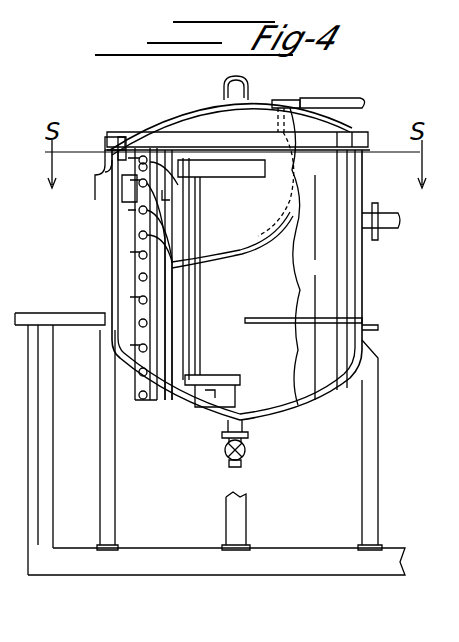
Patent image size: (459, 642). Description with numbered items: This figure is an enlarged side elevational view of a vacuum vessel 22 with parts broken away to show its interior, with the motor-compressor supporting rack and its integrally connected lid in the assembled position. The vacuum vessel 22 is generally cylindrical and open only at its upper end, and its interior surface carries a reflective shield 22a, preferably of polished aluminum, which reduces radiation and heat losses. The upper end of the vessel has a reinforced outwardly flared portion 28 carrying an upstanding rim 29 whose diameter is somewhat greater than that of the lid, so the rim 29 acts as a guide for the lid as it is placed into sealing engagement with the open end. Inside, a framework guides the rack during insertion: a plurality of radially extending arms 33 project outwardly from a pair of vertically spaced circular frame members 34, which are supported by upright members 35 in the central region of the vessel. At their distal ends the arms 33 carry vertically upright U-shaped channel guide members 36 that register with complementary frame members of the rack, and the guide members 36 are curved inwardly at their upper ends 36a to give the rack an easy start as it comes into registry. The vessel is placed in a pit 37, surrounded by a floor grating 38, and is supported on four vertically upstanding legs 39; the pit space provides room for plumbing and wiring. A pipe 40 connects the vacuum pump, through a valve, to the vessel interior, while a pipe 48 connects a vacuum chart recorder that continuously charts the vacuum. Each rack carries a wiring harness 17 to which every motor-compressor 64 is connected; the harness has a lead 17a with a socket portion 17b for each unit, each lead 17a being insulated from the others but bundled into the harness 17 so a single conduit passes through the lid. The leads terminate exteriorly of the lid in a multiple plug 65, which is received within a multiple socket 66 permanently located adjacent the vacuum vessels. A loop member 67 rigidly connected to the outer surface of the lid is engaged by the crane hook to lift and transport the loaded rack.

The wiring harness 17 is at (175, 248).
The lead 17a is at (155, 150).
The socket portion 17b is at (143, 323).
The vacuum vessel 22 is at (362, 282).
The reflective shield 22a is at (240, 148).
The outwardly flared portion 28 is at (100, 165).
The upstanding rim 29 is at (112, 137).
The radially extending arms 33 is at (167, 181).
The circular frame members 34 is at (190, 152).
The upright members 35 is at (193, 302).
The U-shaped channel guide members 36 is at (190, 282).
The upper ends 36a is at (170, 150).
The pit 37 is at (193, 480).
The floor grating 38 is at (72, 313).
The legs 39 is at (115, 452).
The pipe 40 is at (380, 210).
The pipe 48 is at (376, 326).
The motor-compressor 64 is at (122, 208).
The multiple plug 65 is at (278, 100).
The multiple socket 66 is at (310, 98).
The loop member 67 is at (224, 80).